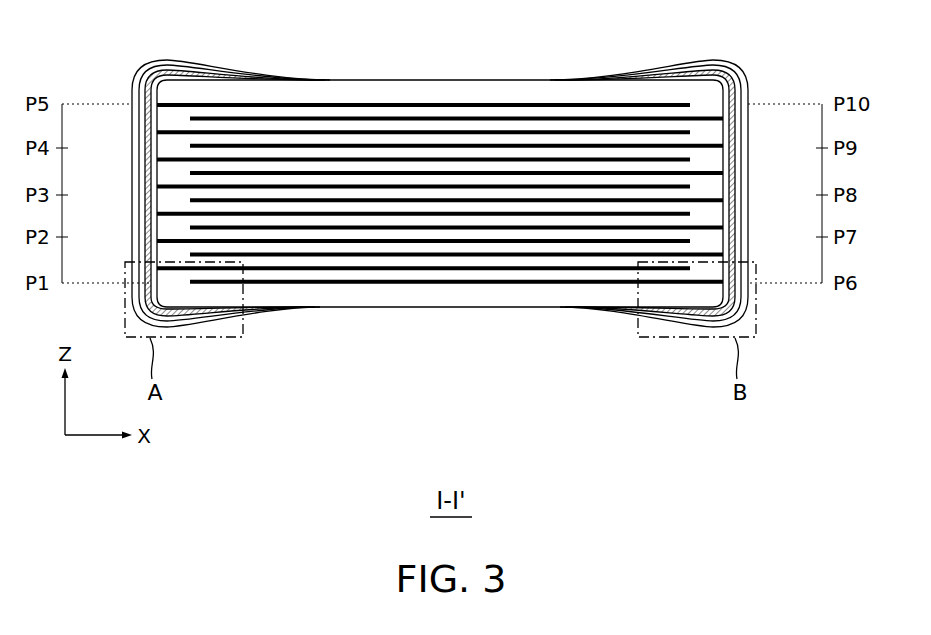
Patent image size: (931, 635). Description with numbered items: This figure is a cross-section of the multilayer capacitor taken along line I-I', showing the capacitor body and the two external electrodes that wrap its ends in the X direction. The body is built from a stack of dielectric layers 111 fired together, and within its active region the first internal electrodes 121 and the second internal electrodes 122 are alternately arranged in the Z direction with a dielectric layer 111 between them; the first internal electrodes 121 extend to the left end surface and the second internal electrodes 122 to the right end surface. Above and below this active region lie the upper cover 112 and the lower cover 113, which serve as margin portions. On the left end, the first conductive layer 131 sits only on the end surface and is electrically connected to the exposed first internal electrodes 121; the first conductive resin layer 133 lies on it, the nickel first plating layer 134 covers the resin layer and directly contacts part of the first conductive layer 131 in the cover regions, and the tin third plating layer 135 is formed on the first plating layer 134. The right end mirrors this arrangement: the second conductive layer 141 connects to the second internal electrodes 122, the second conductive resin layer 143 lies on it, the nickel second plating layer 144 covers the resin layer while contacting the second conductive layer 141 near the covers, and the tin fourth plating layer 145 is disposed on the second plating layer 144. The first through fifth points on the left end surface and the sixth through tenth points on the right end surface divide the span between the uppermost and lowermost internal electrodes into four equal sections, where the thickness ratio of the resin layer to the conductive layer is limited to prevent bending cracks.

The dielectric layer 111 is at (173, 120).
The upper cover 112 is at (447, 96).
The lower cover 113 is at (439, 298).
The first internal electrode 121 is at (373, 108).
The second internal electrode 122 is at (509, 110).
The first conductive layer 131 is at (205, 230).
The first conductive resin layer 133 is at (233, 327).
The first plating layer 134 is at (200, 328).
The third plating layer 135 is at (258, 330).
The second conductive layer 141 is at (676, 230).
The second conductive resin layer 143 is at (648, 327).
The second plating layer 144 is at (680, 330).
The fourth plating layer 145 is at (623, 332).